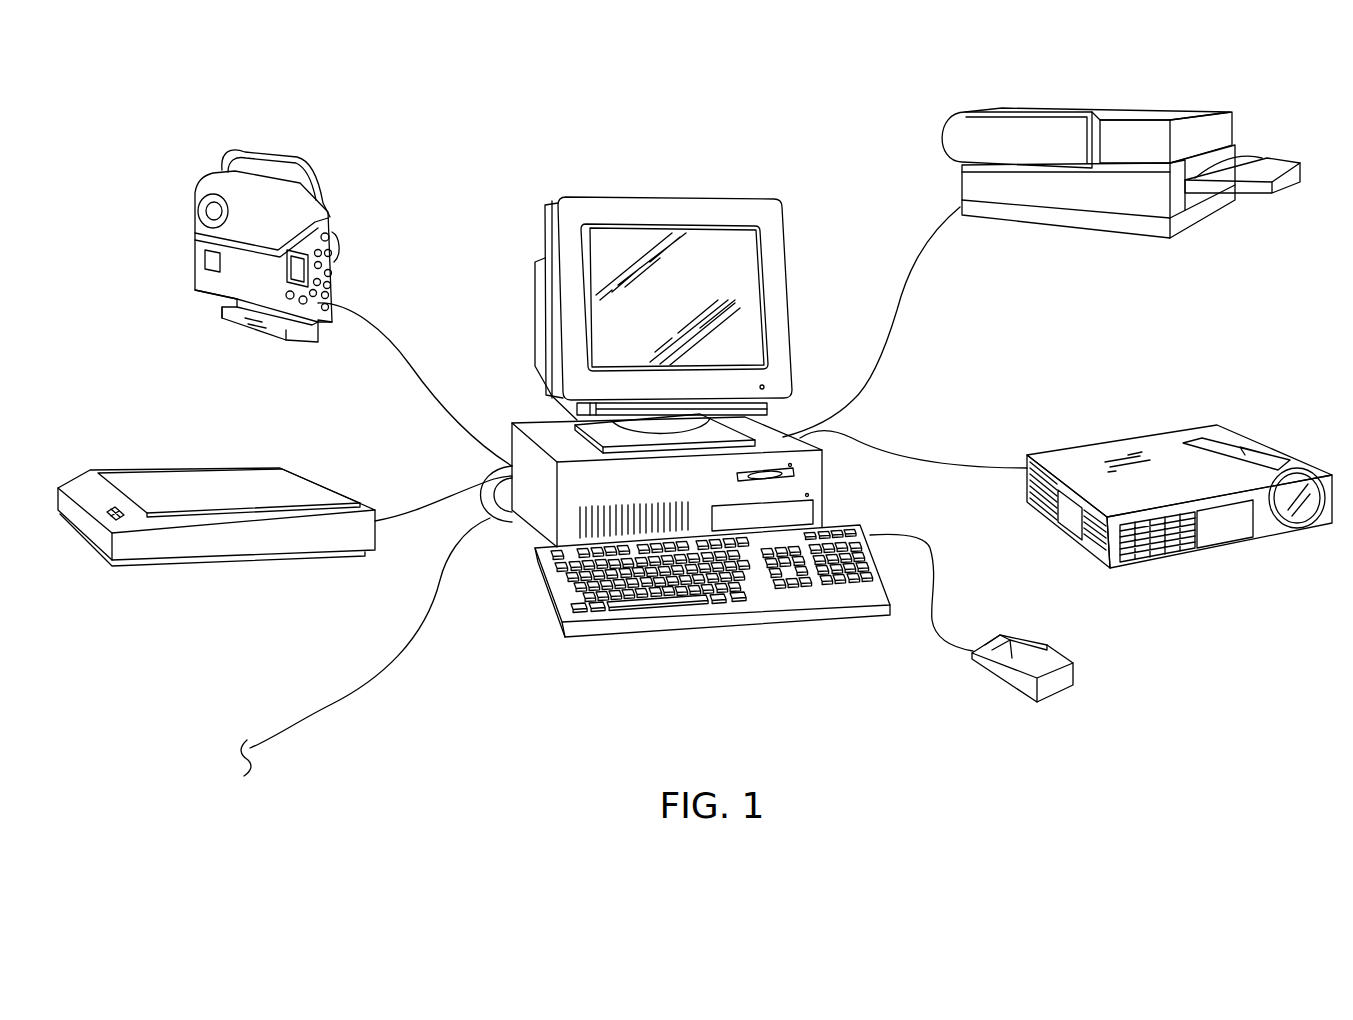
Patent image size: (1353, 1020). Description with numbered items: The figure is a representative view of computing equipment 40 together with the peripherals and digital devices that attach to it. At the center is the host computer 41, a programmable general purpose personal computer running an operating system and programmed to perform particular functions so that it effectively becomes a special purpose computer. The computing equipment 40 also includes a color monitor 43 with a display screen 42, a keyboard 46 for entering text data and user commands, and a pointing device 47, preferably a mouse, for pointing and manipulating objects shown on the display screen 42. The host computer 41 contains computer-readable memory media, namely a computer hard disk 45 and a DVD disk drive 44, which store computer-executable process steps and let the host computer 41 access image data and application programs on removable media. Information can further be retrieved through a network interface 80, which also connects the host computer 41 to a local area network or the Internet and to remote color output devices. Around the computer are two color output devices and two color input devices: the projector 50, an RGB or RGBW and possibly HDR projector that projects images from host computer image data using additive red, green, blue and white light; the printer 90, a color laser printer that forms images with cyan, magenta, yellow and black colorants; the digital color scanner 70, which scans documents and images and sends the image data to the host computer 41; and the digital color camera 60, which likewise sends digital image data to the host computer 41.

The computing equipment 40 is at (763, 168).
The host computer 41 is at (530, 424).
The display screen 42 is at (743, 307).
The color monitor 43 is at (667, 197).
The DVD disk drive 44 is at (796, 475).
The computer hard disk 45 is at (808, 508).
The keyboard 46 is at (650, 612).
The pointing device 47 is at (1053, 688).
The projector 50 is at (1112, 421).
The digital color camera 60 is at (338, 222).
The digital color scanner 70 is at (267, 558).
The network interface 80 is at (295, 780).
The printer 90 is at (1018, 104).